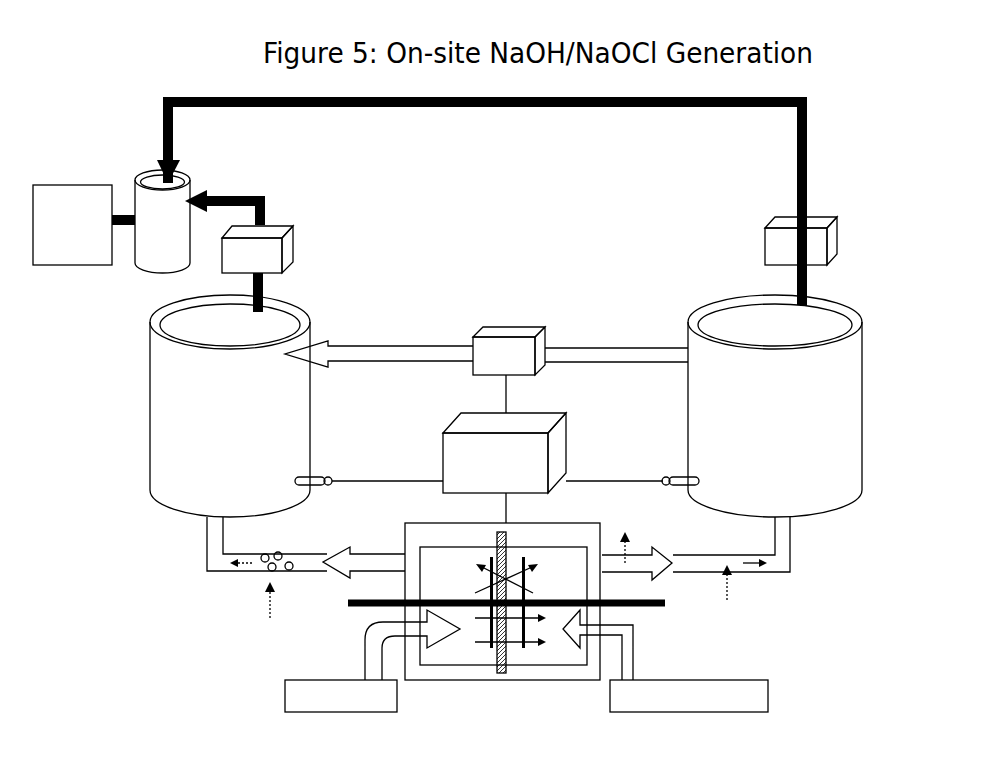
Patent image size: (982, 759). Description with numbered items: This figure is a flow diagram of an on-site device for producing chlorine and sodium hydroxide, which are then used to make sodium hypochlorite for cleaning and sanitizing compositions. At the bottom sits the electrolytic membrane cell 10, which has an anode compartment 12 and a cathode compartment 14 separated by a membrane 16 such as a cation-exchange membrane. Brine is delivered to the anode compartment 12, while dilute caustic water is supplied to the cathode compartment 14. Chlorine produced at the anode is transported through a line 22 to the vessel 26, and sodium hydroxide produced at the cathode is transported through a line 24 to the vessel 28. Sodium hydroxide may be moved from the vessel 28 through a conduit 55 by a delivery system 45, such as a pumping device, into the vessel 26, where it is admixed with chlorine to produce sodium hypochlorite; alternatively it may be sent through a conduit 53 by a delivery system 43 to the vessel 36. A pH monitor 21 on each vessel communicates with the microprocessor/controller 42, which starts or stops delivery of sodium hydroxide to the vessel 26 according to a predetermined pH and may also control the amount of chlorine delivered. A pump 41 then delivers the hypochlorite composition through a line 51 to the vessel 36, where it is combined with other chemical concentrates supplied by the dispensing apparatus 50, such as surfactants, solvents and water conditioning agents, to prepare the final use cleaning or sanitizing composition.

The electrolytic membrane cell 10 is at (600, 688).
The anode compartment 12 is at (460, 657).
The cathode compartment 14 is at (523, 658).
The membrane 16 is at (502, 673).
The pH monitor 21 is at (316, 477).
The chlorine gas outlet conduit 22 is at (215, 540).
The caustic solution outlet conduit 24 is at (785, 540).
The vessel 26 is at (165, 366).
The vessel 28 is at (848, 366).
The vessel 36 is at (160, 250).
The pump 41 is at (266, 227).
The microprocessor/controller 42 is at (537, 414).
The delivery system 43 is at (813, 219).
The delivery system 45 is at (515, 326).
The dispensing apparatus 50 is at (72, 190).
The NaOCl supply line 51 is at (264, 289).
The conduit 53 is at (797, 147).
The conduit 55 is at (617, 348).